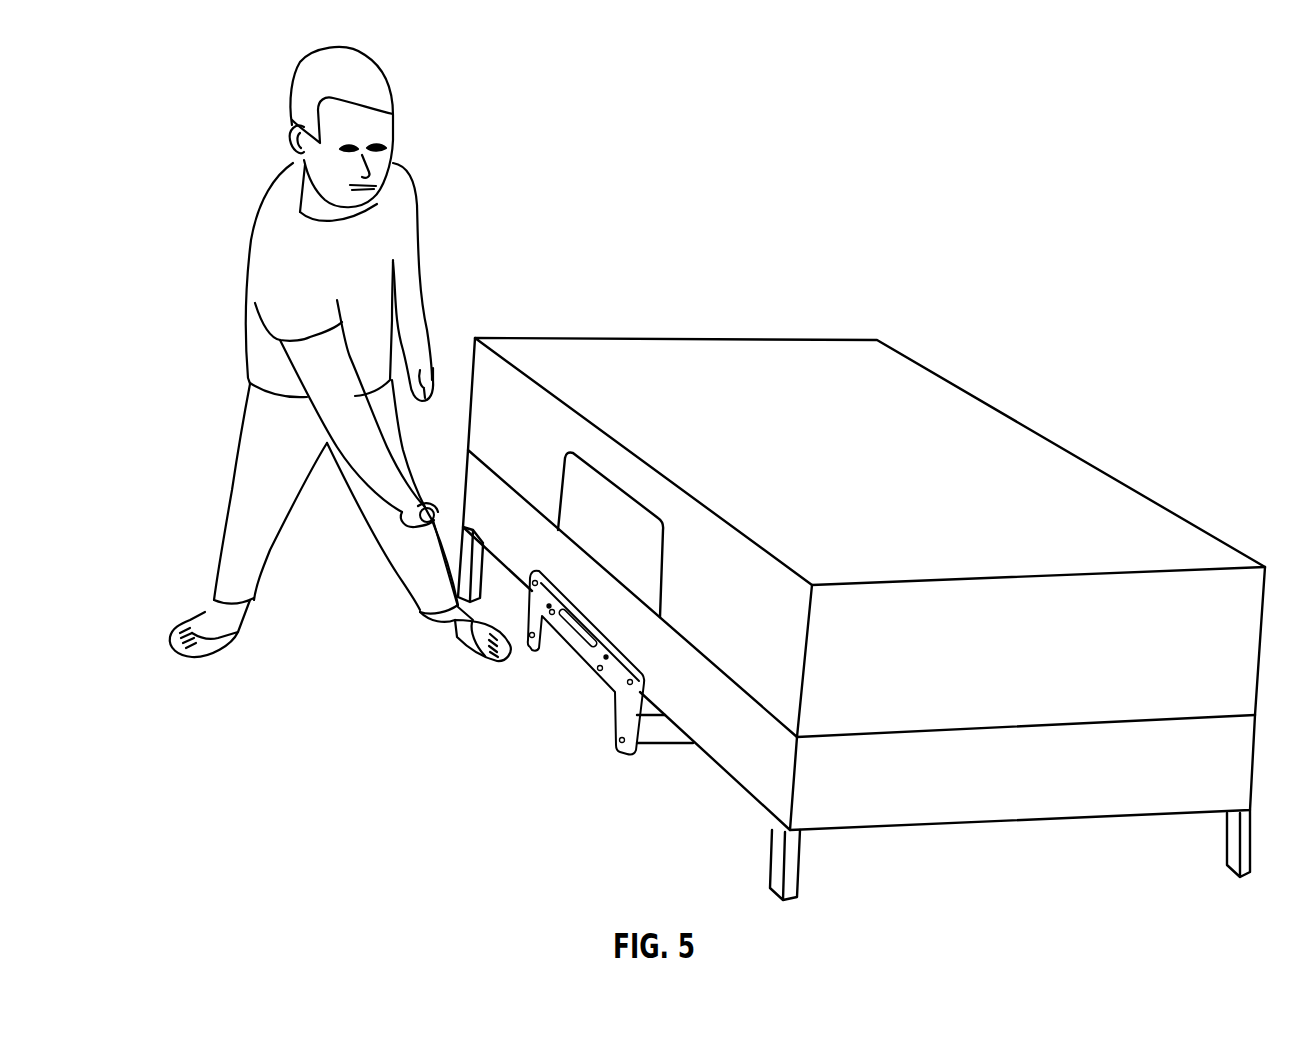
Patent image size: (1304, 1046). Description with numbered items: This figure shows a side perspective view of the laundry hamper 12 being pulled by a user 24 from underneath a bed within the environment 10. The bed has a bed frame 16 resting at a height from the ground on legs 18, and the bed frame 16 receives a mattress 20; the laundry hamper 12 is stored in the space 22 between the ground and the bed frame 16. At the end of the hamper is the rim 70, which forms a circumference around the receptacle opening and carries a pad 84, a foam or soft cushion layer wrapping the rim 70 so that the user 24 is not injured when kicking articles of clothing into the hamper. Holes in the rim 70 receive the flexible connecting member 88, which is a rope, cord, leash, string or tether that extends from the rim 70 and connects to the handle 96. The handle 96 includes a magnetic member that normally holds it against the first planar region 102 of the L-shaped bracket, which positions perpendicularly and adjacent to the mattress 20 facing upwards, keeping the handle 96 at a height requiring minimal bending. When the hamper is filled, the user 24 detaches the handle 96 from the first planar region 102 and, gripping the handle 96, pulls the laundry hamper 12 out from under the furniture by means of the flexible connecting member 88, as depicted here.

The environment 10 is at (1122, 340).
The laundry hamper 12 is at (637, 782).
The bed frame 16 is at (703, 687).
The legs 18 is at (793, 862).
The mattress 20 is at (710, 543).
The space 22 is at (740, 828).
The user 24 is at (278, 293).
The rim 70 is at (572, 635).
The pad 84 is at (623, 721).
The flexible connecting member 88 is at (522, 578).
The handle 96 is at (420, 515).
The first planar region 102 is at (622, 517).